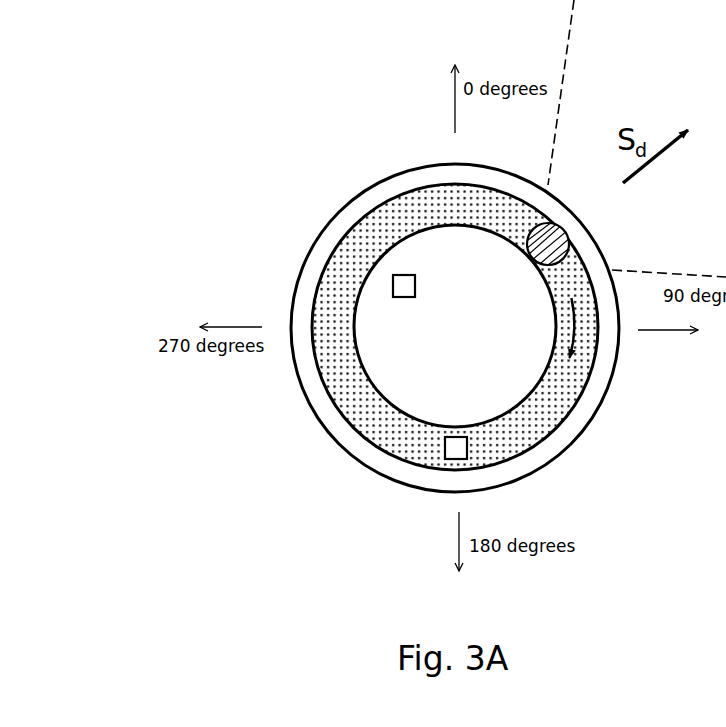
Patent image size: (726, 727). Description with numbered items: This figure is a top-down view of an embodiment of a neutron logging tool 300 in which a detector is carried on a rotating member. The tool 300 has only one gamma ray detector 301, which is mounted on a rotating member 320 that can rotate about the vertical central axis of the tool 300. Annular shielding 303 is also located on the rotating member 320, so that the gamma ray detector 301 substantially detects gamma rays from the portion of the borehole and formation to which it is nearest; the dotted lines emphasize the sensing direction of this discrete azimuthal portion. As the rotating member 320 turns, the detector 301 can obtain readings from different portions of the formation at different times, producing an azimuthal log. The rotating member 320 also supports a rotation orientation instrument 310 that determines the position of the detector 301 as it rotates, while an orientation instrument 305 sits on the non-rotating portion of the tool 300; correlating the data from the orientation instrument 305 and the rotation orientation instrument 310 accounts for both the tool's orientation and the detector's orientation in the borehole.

The neutron logging tool 300 is at (358, 176).
The gamma ray detector 301 is at (568, 248).
The shielding 303 is at (380, 360).
The orientation instrument 305 is at (393, 287).
The rotation orientation instrument 310 is at (445, 446).
The rotating member 320 is at (561, 433).